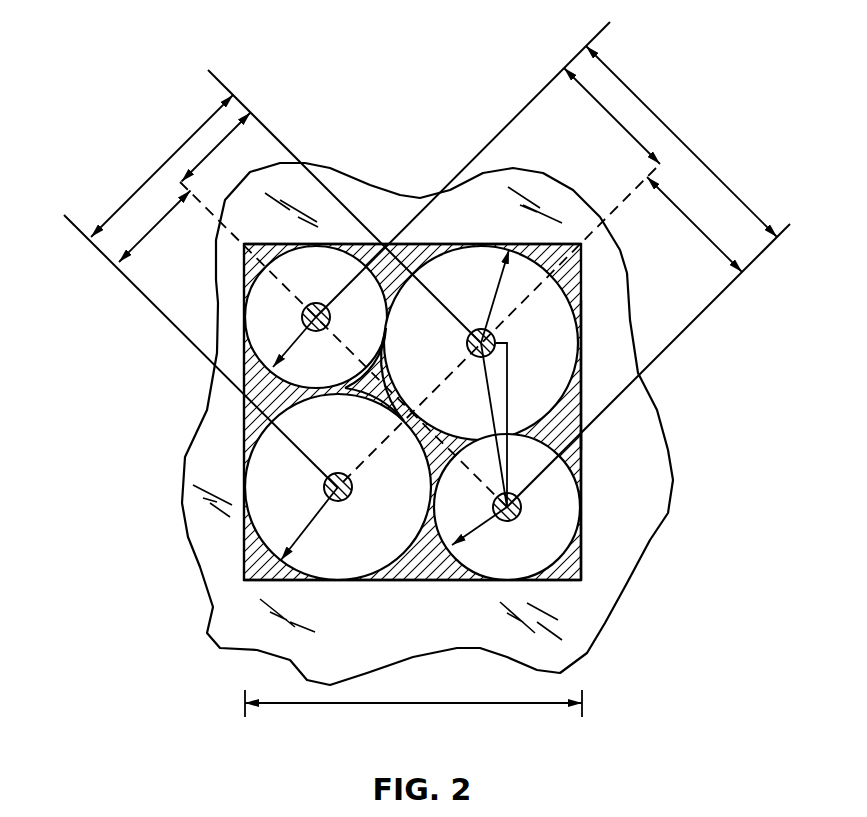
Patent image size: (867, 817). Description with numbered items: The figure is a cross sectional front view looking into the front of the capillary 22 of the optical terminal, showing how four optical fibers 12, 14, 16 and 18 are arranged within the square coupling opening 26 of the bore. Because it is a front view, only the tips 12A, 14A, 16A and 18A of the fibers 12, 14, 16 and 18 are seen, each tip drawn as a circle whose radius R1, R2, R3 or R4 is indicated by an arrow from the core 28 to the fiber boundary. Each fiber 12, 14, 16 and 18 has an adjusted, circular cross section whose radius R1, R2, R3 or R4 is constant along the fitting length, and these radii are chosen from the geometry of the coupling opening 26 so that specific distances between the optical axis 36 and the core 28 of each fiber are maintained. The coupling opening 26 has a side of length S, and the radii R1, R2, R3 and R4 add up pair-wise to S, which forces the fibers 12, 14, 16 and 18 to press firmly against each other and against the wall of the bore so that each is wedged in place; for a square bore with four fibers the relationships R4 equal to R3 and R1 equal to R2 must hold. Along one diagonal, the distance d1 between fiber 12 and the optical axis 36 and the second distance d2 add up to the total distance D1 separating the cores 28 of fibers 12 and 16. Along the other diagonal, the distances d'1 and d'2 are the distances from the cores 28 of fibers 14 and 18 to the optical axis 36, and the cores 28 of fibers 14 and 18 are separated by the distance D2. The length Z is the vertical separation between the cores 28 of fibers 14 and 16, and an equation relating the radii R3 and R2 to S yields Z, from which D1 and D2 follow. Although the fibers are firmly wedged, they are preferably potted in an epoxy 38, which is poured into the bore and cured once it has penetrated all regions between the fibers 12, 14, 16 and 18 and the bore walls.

The fiber 12 is at (347, 246).
The fiber 14 is at (581, 388).
The fiber 16 is at (463, 581).
The fiber 18 is at (387, 581).
The tip 12A is at (380, 336).
The tip 14A is at (482, 425).
The tip 16A is at (536, 563).
The tip 18A is at (385, 553).
The capillary 22 is at (670, 450).
The coupling opening 26 is at (243, 417).
The core 28 is at (316, 303).
The optical axis 36 is at (396, 413).
The epoxy 38 is at (581, 452).
The radius R1 is at (294, 343).
The radius R2 is at (479, 526).
The radius R3 is at (490, 314).
The radius R4 is at (313, 518).
The length Z is at (508, 400).
The total distance D1 is at (692, 147).
The distance D2 is at (158, 163).
The distance d1 is at (608, 114).
The second distance d2 is at (678, 214).
The distance d'1 is at (223, 147).
The distance d'2 is at (160, 233).
The side length S is at (462, 703).